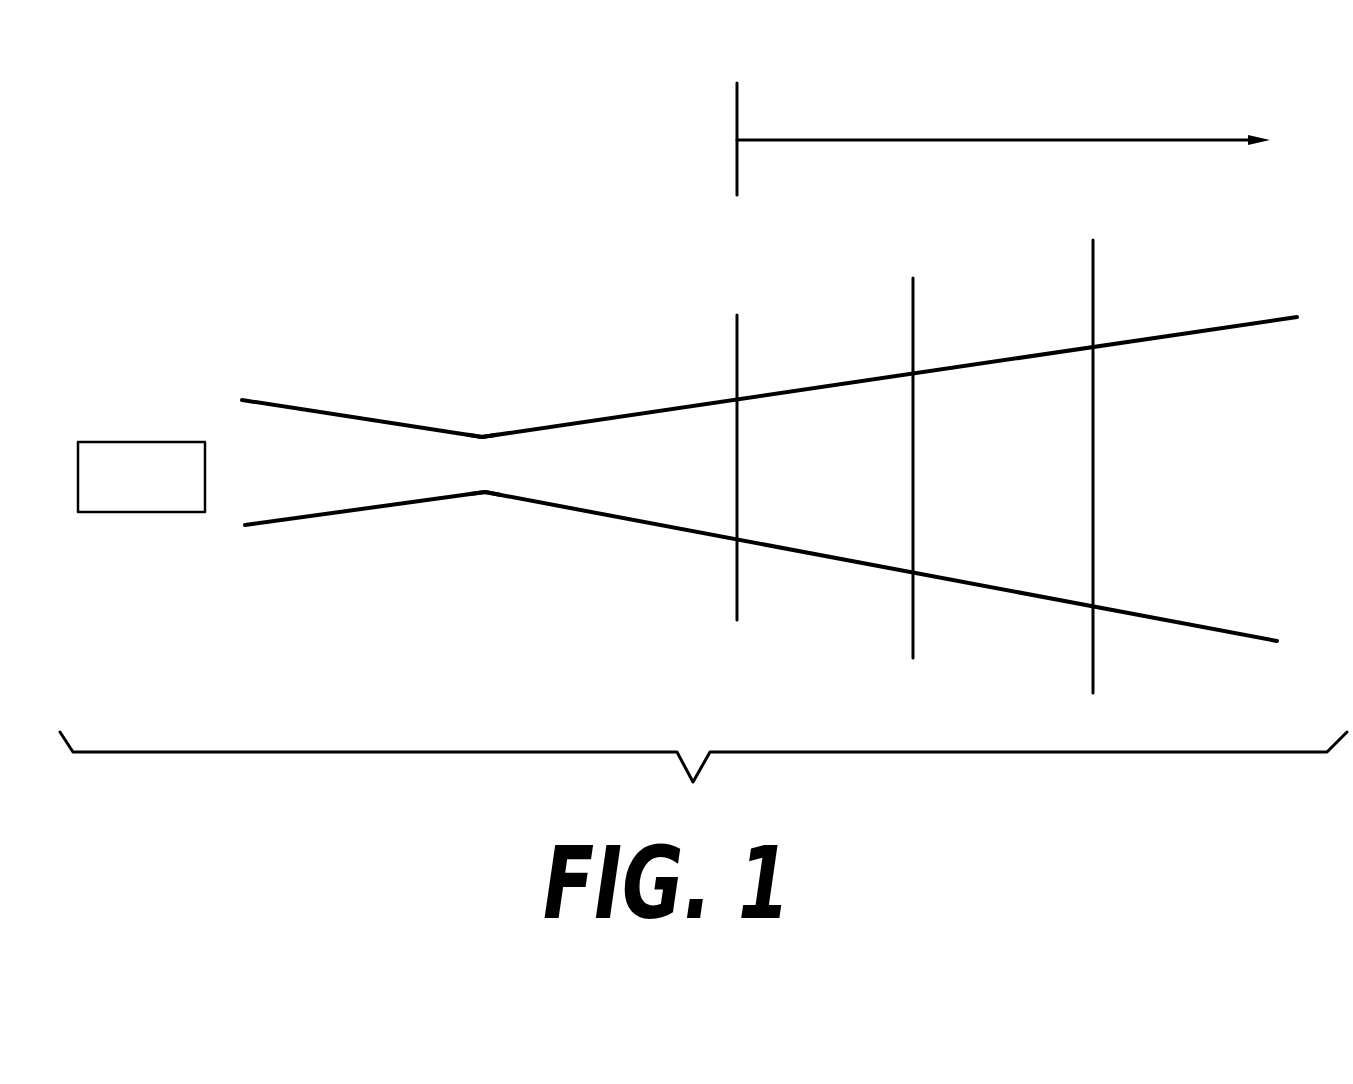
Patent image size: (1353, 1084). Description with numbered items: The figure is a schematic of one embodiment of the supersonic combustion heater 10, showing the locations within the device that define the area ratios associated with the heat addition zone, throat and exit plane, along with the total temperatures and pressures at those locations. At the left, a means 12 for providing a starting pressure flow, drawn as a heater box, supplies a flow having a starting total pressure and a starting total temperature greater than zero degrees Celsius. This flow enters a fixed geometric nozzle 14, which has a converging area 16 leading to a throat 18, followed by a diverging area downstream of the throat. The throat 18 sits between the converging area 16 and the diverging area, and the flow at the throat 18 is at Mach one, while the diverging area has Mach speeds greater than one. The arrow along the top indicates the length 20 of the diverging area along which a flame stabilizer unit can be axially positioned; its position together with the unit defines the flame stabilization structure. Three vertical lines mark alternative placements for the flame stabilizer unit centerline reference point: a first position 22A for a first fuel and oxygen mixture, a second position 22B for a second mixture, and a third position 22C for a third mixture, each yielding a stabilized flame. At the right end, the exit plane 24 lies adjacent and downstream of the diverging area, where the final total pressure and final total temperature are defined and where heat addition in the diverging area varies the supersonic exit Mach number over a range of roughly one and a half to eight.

The supersonic combustion heater 10 is at (302, 297).
The means for providing a starting pressure flow 12 is at (157, 525).
The fixed geometric nozzle 14 is at (781, 512).
The converging area 16 is at (315, 467).
The throat 18 is at (463, 460).
The length 20 is at (858, 138).
The first position 22A is at (747, 448).
The second position 22B is at (922, 450).
The third position 22C is at (1098, 450).
The exit plane 24 is at (1262, 651).